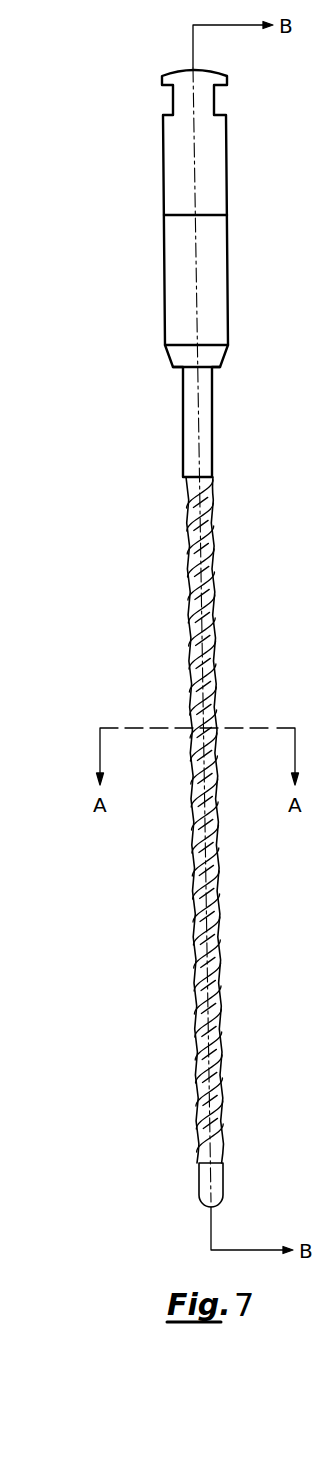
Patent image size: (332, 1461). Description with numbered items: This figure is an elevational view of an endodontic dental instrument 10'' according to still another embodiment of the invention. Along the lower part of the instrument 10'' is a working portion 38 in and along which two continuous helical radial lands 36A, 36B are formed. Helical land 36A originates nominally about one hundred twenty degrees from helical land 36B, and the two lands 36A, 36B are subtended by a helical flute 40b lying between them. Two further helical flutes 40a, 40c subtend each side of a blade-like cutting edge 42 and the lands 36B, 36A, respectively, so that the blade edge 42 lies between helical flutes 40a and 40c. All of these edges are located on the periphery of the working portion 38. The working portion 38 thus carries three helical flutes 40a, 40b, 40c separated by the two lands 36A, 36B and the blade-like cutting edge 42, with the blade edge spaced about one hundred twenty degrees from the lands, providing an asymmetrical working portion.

The endodontic instrument 10'' is at (175, 609).
The working portion 38 is at (213, 571).
The helical radial land 36A is at (217, 833).
The helical radial land 36B is at (220, 878).
The helical flute 40a is at (218, 900).
The helical flute 40b is at (217, 857).
The helical flute 40c is at (220, 933).
The blade-like cutting edge 42 is at (217, 918).